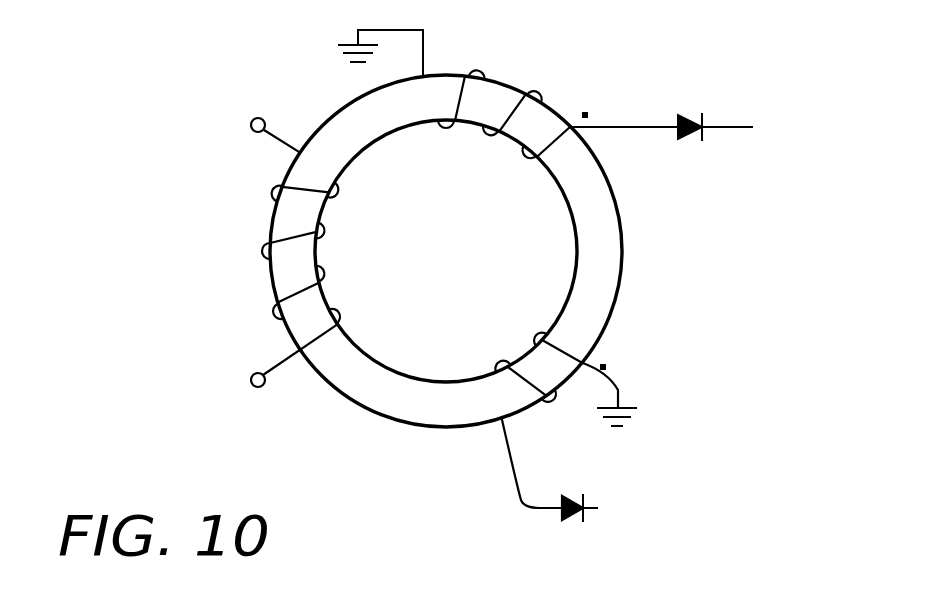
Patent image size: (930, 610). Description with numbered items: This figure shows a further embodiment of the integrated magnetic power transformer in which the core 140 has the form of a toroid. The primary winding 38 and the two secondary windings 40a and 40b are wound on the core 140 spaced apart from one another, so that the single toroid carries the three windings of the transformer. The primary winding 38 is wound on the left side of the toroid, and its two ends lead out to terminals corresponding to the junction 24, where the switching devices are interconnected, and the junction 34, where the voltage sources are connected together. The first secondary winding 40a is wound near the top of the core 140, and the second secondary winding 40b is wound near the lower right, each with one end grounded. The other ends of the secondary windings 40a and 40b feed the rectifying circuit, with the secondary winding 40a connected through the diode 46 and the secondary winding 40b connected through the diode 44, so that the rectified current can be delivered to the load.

The core 140 is at (608, 257).
The secondary winding 40a is at (628, 130).
The secondary winding 40b is at (505, 362).
The diode 46 is at (692, 118).
The diode 44 is at (565, 520).
The primary winding 38 is at (256, 255).
The junction 24 is at (253, 131).
The junction 34 is at (253, 387).